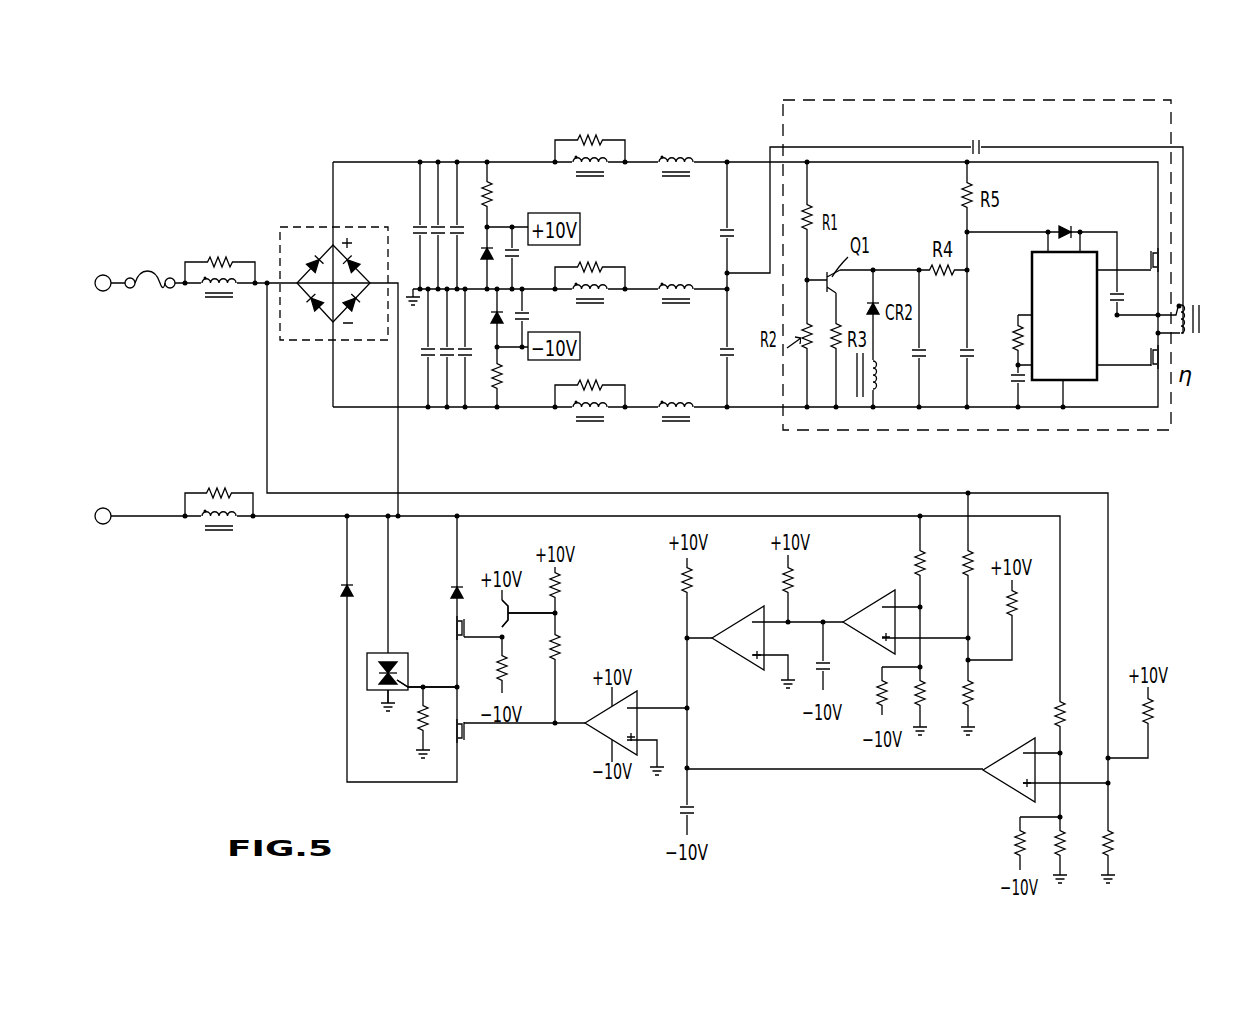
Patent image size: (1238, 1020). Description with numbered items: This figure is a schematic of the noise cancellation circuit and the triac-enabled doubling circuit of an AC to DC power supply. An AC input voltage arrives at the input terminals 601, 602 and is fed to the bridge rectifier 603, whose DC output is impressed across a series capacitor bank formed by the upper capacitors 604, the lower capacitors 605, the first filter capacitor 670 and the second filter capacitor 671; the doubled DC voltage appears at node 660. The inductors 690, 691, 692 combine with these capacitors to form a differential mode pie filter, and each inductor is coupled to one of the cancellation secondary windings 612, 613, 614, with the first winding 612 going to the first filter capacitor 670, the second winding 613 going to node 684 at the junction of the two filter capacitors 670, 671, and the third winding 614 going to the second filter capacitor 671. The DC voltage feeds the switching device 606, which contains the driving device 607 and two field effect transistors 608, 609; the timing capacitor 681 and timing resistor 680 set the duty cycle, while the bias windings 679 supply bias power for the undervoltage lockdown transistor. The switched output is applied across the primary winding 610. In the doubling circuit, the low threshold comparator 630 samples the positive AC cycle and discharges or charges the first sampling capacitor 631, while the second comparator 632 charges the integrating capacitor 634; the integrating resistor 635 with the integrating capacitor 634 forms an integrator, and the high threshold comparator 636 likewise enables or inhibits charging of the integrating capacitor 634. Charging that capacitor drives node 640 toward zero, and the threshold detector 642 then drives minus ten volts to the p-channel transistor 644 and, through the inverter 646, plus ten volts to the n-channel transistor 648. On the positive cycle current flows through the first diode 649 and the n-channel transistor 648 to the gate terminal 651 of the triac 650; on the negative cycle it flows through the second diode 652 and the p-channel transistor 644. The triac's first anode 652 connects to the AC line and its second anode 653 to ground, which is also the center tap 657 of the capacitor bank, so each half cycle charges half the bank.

The input terminal 601 is at (101, 291).
The input terminal 602 is at (101, 524).
The bridge rectifier 603 is at (307, 226).
The capacitors C1A-C 604 is at (437, 161).
The capacitors C2A-C 605 is at (445, 410).
The switching device 606 is at (978, 100).
The driving device U1 607 is at (1064, 317).
The field effect transistor Q2 608 is at (1144, 250).
The field effect transistor Q3 609 is at (1144, 348).
The primary winding 610 is at (1182, 303).
The cancellation secondary winding 612 is at (676, 183).
The cancellation secondary winding 613 is at (676, 311).
The cancellation secondary winding 614 is at (676, 428).
The low threshold comparator U5C 630 is at (867, 605).
The capacitor C25 631 is at (829, 662).
The comparator U5A 632 is at (743, 655).
The capacitor C24 634 is at (700, 808).
The resistor R45 635 is at (706, 584).
The high threshold comparator U5D 636 is at (1010, 752).
The node 640 is at (692, 708).
The threshold detector U5B 642 is at (590, 728).
The transistor Q15 644 is at (484, 748).
The inverter Q16 646 is at (540, 613).
The transistor Q14 648 is at (467, 630).
The diode CR12 649 is at (450, 589).
The triac Q13 650 is at (390, 657).
The gate terminal 651 is at (408, 678).
The diode CR11 / first anode 652 is at (340, 588).
The second anode 653 is at (382, 690).
The center tap 657 is at (411, 293).
The node 660 is at (728, 160).
The capacitor C27 670 is at (709, 245).
The capacitor C28 671 is at (709, 363).
The windings T1 679 is at (883, 374).
The resistor R5 680 is at (1000, 334).
The capacitor C5 681 is at (1001, 383).
The node 684 is at (746, 291).
The inductor 690 is at (590, 172).
The inductor 691 is at (592, 299).
The inductor 692 is at (590, 417).